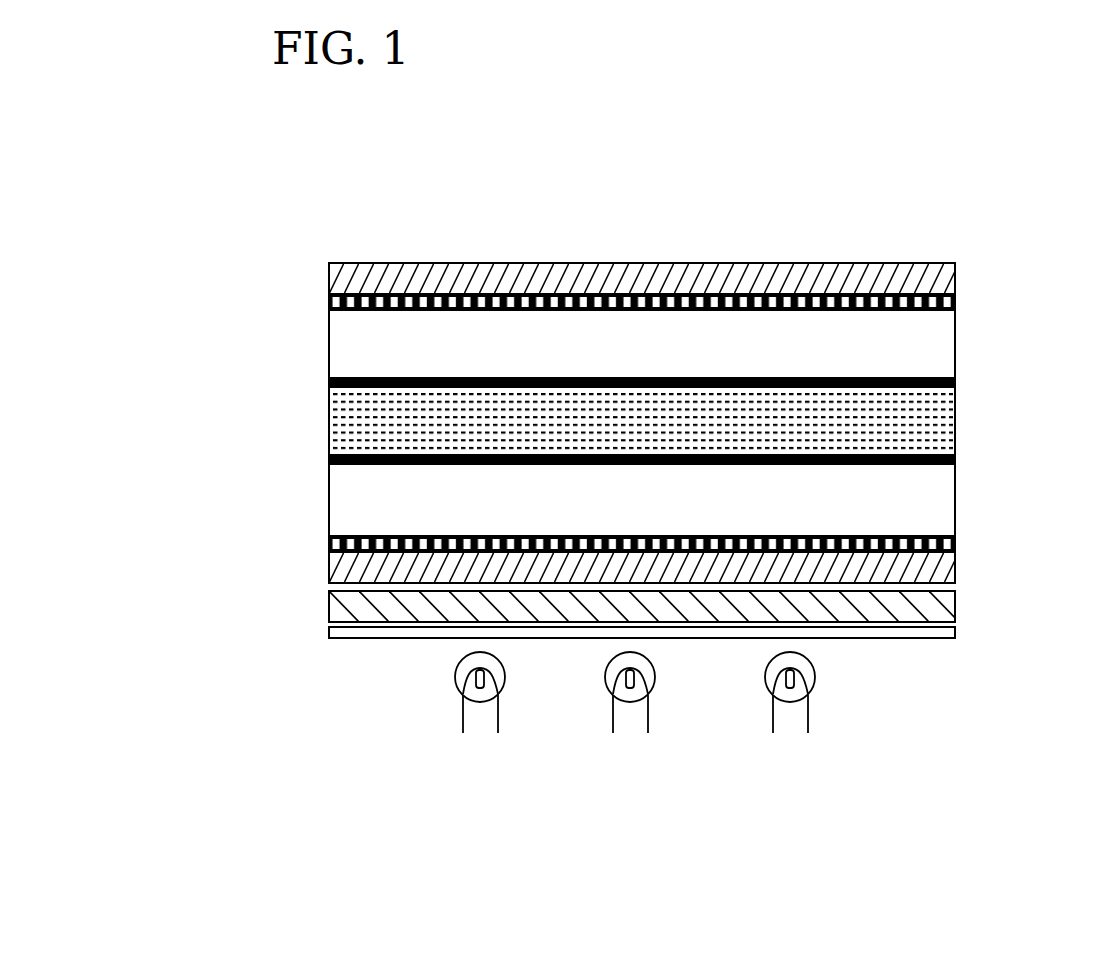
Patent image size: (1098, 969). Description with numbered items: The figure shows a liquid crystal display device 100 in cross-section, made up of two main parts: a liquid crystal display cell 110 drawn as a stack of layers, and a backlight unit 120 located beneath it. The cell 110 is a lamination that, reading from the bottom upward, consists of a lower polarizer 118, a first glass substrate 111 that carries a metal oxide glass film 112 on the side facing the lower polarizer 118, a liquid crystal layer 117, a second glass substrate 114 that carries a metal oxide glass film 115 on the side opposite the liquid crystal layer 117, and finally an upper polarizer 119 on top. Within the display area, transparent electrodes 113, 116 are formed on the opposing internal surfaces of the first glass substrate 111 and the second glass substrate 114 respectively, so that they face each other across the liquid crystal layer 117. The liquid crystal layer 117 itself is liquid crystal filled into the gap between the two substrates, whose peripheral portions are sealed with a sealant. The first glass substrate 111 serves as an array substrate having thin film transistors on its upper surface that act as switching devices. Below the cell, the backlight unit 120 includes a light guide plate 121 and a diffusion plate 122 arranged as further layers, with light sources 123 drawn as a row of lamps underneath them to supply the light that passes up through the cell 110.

The liquid crystal display device 100 is at (658, 194).
The liquid crystal display cell 110 is at (316, 264).
The first glass substrate 111 is at (955, 495).
The metal oxide glass film 112 is at (955, 539).
The transparent electrode 113 is at (955, 457).
The second glass substrate 114 is at (955, 342).
The metal oxide glass film 115 is at (955, 299).
The transparent electrode 116 is at (955, 380).
The liquid crystal layer 117 is at (955, 420).
The lower polarizer 118 is at (955, 567).
The upper polarizer 119 is at (955, 272).
The backlight unit 120 is at (316, 591).
The light guide plate 121 is at (955, 602).
The diffusion plate 122 is at (955, 634).
The light sources 123 is at (790, 740).